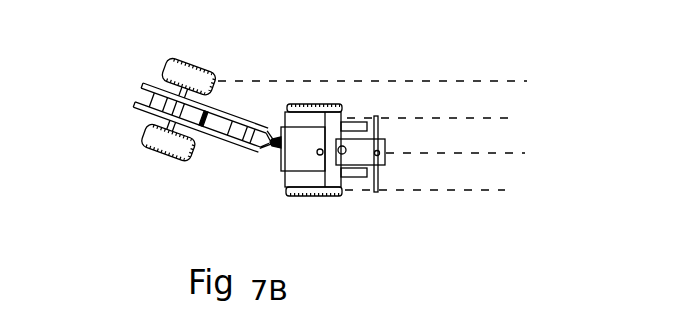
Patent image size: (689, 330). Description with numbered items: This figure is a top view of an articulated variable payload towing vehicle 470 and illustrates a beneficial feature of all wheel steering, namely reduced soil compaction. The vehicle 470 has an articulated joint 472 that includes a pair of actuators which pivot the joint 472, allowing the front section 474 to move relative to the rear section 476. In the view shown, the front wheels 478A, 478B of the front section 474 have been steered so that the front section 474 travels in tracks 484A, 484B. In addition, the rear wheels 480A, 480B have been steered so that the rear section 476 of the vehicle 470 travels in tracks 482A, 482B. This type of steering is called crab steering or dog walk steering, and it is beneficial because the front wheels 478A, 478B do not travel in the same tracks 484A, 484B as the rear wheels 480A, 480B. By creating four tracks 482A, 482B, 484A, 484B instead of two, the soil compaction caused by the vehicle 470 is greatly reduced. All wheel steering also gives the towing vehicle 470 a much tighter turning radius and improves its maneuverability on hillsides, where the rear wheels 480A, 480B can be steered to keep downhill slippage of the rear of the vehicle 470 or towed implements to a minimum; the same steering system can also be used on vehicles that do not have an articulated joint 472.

The articulated towing vehicle 470 is at (92, 93).
The articulated joint 472 is at (268, 141).
The front section 474 is at (327, 259).
The rear section 476 is at (173, 218).
The front wheel 478A is at (327, 103).
The front wheel 478B is at (313, 197).
The rear wheel 480A is at (188, 77).
The rear wheel 480B is at (168, 142).
The track 482A is at (405, 80).
The track 482B is at (522, 155).
The track 484A is at (510, 119).
The track 484B is at (509, 192).